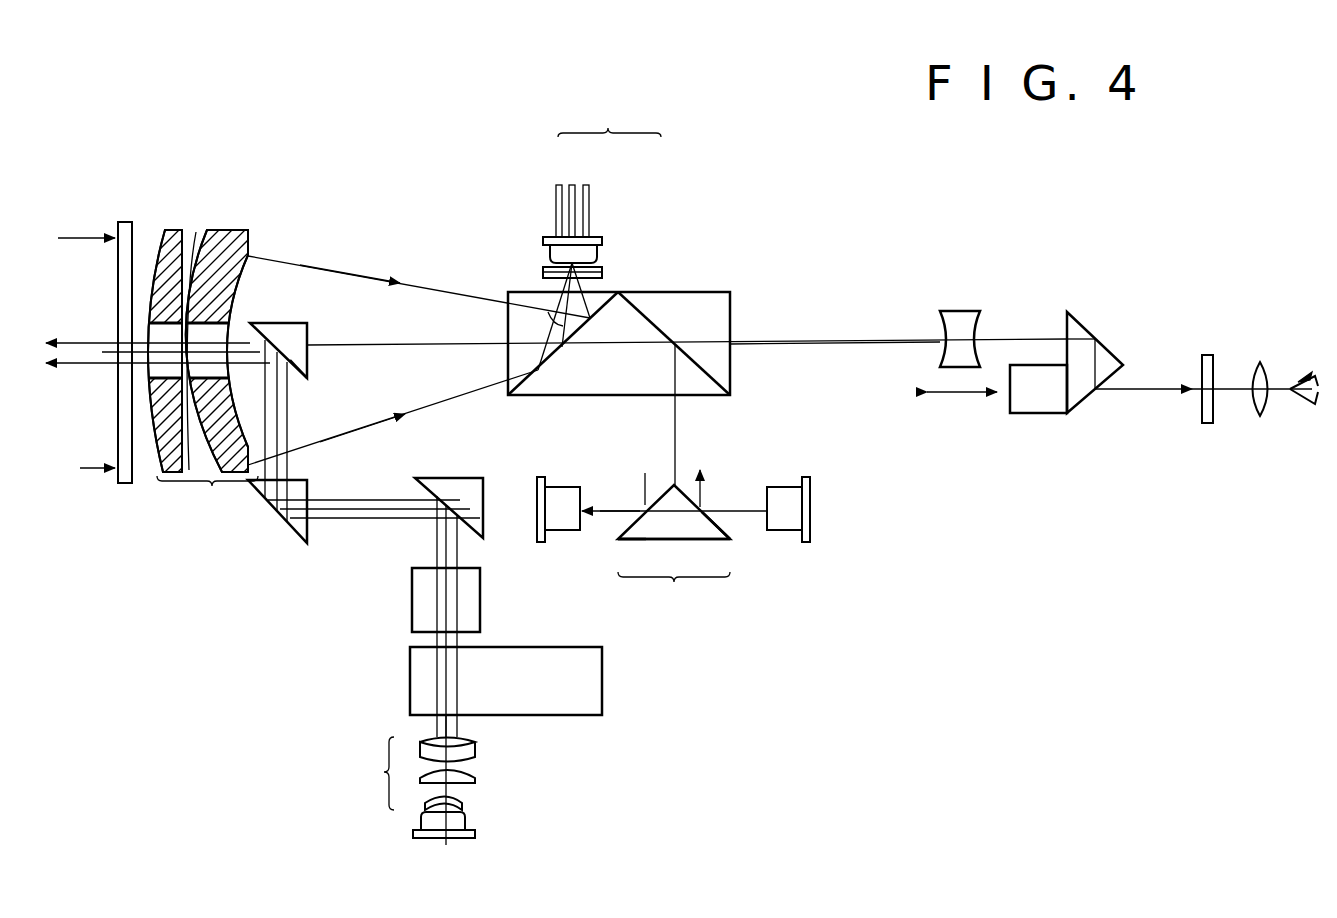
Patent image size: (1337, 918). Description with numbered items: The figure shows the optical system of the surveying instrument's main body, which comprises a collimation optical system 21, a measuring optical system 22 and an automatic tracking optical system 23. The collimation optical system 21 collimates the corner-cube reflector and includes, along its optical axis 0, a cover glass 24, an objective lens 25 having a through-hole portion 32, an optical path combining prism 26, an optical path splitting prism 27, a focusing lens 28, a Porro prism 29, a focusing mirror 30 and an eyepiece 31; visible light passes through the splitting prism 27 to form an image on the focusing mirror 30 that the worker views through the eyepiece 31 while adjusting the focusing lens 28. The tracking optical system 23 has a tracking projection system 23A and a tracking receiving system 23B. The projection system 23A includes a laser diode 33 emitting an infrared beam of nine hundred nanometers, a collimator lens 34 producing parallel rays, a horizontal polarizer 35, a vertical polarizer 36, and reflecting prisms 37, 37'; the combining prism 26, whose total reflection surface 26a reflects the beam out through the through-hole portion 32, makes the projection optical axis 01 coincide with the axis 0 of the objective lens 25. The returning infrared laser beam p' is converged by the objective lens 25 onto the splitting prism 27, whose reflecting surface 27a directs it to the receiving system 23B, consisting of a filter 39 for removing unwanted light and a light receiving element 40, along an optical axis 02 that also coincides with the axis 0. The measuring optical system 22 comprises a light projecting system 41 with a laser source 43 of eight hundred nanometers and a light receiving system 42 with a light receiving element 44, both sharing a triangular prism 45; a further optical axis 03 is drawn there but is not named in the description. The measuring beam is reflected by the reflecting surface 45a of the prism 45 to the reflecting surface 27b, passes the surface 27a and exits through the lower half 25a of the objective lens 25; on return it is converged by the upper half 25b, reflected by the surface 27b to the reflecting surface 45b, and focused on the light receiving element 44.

The collimation optical system 21 is at (862, 324).
The measuring optical system 22 is at (674, 577).
The automatic tracking optical system 23 is at (348, 624).
The tracking projection system 23A is at (392, 528).
The tracking receiving system 23B is at (608, 168).
The cover glass 24 is at (125, 221).
The objective lens 25 is at (203, 373).
The lower half of objective lens 25a is at (157, 462).
The upper half of objective lens 25b is at (225, 236).
The optical path combining prism 26 is at (285, 322).
The total reflection surface 26a is at (300, 376).
The optical path splitting prism 27 is at (708, 296).
The reflecting surface 27a is at (619, 292).
The reflecting surface 27b is at (668, 330).
The focusing lens 28 is at (963, 311).
The Porro prism 29 is at (1062, 418).
The focusing mirror 30 is at (1210, 354).
The eyepiece 31 is at (1256, 417).
The through-hole portion 32 is at (190, 330).
The laser diode 33 is at (426, 838).
The collimator lens 34 is at (407, 780).
The horizontal polarizer 35 is at (418, 685).
The vertical polarizer 36 is at (418, 592).
The reflecting prism 37 is at (449, 483).
The reflecting prism 37' is at (277, 535).
The filter 39 is at (603, 278).
The light receiving element 40 is at (592, 240).
The light projecting system 41 is at (732, 470).
The light receiving system 42 is at (600, 490).
The laser source 43 is at (777, 496).
The light receiving element 44 is at (555, 530).
The triangular prism 45 is at (710, 540).
The reflecting surface 45a is at (718, 527).
The reflecting surface 45b is at (625, 536).
The optical axis 0 is at (405, 345).
The optical axis 01 is at (458, 544).
The optical axis 02 is at (552, 316).
The optical axis 03 is at (676, 423).
The infrared laser beam p' is at (88, 387).